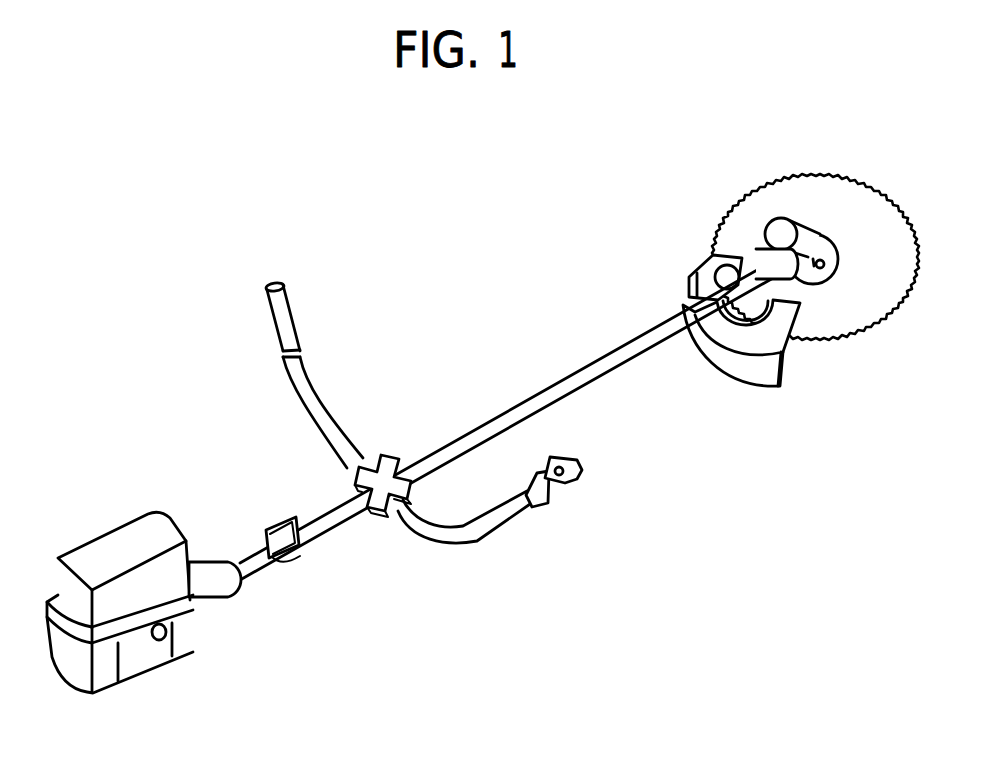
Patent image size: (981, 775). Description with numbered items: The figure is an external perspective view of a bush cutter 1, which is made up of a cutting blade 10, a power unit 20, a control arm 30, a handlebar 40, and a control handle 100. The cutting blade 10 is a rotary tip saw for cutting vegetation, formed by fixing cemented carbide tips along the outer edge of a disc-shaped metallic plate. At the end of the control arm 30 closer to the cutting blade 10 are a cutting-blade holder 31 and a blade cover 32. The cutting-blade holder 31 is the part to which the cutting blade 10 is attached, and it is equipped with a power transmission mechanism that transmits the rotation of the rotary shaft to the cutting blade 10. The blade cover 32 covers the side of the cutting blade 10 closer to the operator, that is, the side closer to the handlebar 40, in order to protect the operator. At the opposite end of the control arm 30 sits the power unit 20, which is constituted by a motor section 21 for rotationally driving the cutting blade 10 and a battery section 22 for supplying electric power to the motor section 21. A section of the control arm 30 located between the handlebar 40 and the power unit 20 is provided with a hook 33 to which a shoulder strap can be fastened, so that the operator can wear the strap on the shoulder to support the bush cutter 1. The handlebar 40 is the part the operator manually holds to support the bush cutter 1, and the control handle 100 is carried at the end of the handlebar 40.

The bush cutter 1 is at (218, 284).
The cutting blade 10 is at (866, 190).
The power unit 20 is at (327, 618).
The motor section 21 is at (183, 633).
The battery section 22 is at (177, 580).
The control arm 30 is at (570, 380).
The cutting-blade holder 31 is at (777, 233).
The blade cover 32 is at (687, 288).
The hook 33 is at (283, 522).
The handlebar 40 is at (497, 523).
The control handle 100 is at (573, 473).